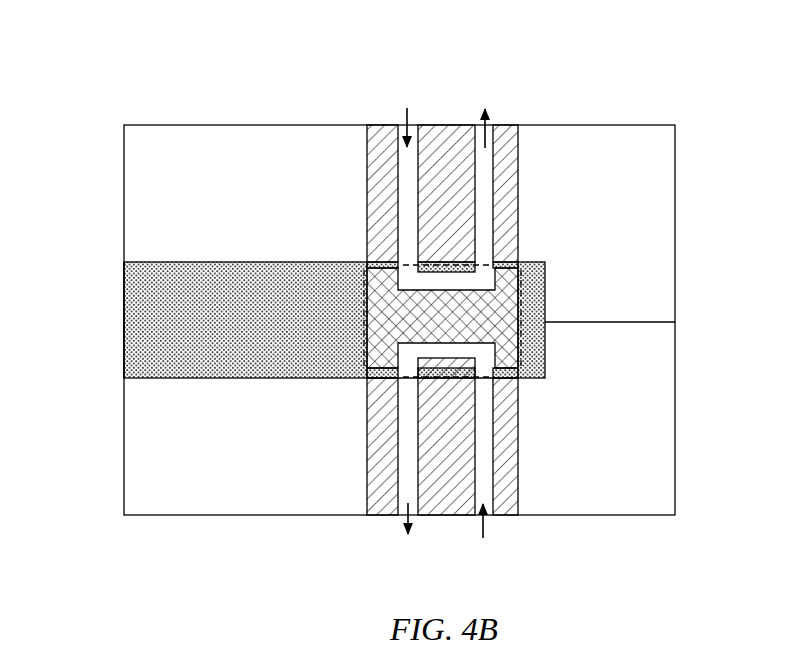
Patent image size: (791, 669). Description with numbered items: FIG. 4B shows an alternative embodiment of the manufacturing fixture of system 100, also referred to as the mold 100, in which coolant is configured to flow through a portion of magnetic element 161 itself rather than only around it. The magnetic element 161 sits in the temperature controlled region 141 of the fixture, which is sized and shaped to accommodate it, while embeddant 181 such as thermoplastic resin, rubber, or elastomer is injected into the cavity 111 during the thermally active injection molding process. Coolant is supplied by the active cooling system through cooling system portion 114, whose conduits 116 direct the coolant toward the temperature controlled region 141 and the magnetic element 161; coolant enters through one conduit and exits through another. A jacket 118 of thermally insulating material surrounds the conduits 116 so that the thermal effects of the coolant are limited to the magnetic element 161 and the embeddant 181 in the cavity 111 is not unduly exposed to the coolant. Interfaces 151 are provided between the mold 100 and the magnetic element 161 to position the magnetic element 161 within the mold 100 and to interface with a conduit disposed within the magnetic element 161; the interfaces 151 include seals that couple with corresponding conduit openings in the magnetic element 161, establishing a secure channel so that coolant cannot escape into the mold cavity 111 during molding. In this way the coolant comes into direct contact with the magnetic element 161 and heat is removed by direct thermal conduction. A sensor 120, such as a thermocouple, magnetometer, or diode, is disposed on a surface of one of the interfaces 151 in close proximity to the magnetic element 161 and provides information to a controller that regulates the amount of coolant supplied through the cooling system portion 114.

The system 100 is at (666, 59).
The cavity 111 is at (99, 318).
The cooling system portion 114 is at (536, 174).
The conduits 116 is at (407, 168).
The jacket 118 is at (392, 228).
The sensor 120 is at (498, 375).
The temperature controlled region 141 is at (519, 261).
The interfaces 151 is at (380, 262).
The magnetic element 161 is at (442, 318).
The embeddant 181 is at (334, 320).